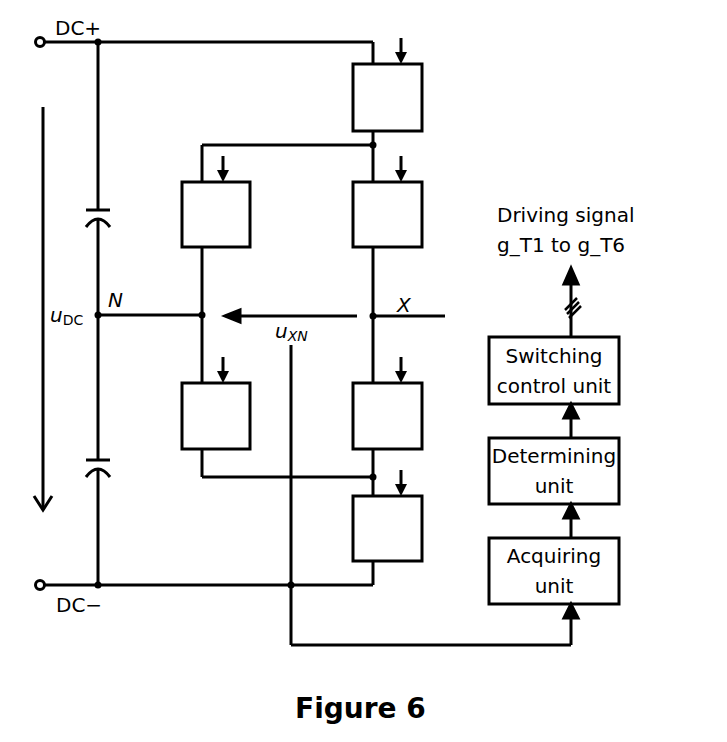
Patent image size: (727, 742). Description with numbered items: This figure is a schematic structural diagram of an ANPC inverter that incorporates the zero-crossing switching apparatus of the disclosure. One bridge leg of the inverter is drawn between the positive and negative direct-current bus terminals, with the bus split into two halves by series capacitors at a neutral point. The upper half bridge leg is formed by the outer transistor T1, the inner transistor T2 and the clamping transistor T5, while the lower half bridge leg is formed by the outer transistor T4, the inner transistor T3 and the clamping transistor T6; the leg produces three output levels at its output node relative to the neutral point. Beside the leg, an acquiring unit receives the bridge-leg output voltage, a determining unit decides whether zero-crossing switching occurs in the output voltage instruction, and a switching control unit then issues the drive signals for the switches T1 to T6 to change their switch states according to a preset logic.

The outer transistor of the upper half bridge leg T1 is at (405, 84).
The inner transistor of the upper half bridge leg T2 is at (405, 201).
The inner transistor of the lower half bridge leg T3 is at (405, 403).
The outer transistor of the lower half bridge leg T4 is at (405, 515).
The clamping transistor of the upper half bridge leg T5 is at (231, 198).
The clamping transistor of the lower half bridge leg T6 is at (231, 399).